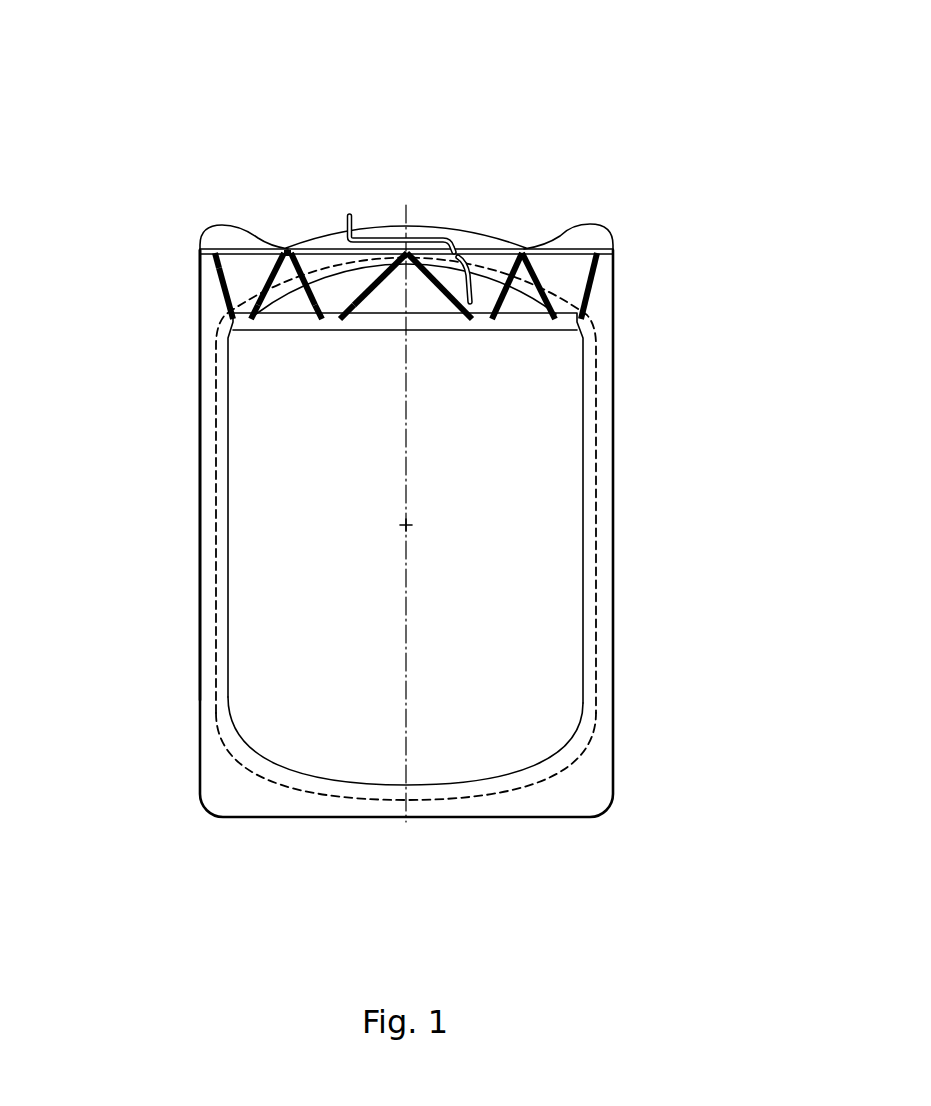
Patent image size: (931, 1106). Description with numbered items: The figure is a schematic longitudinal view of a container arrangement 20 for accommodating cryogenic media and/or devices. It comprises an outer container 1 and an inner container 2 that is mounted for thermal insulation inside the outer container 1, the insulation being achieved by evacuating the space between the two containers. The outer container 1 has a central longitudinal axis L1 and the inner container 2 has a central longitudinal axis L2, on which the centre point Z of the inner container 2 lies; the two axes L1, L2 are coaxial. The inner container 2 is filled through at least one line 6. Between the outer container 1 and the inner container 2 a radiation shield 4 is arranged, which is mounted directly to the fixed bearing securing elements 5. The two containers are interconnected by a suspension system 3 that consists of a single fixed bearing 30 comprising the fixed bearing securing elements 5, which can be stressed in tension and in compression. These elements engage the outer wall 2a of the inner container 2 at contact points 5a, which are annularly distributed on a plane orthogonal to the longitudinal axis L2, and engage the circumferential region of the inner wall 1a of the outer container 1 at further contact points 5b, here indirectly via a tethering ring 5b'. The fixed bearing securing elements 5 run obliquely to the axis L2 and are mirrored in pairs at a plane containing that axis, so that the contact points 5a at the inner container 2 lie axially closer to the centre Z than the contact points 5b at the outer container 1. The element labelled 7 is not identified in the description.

The outer container 1 is at (453, 533).
The inner wall of the outer container 1a is at (203, 634).
The inner container 2 is at (332, 549).
The outer wall of the inner container 2a is at (227, 560).
The suspension system 3 is at (494, 255).
The fixed bearing 30 is at (638, 283).
The radiation shield 4 is at (597, 623).
The fixed bearing securing elements 5 is at (362, 283).
The contact points 5a is at (340, 320).
The further contact points 5b is at (332, 231).
The tethering ring 5b' is at (236, 212).
The line 6 is at (426, 241).
The end contact leg 7 is at (210, 290).
The container arrangement 20 is at (489, 141).
The central longitudinal axis of the outer container L1 is at (472, 513).
The central longitudinal axis of the inner container L2 is at (412, 488).
The centre point Z is at (428, 526).